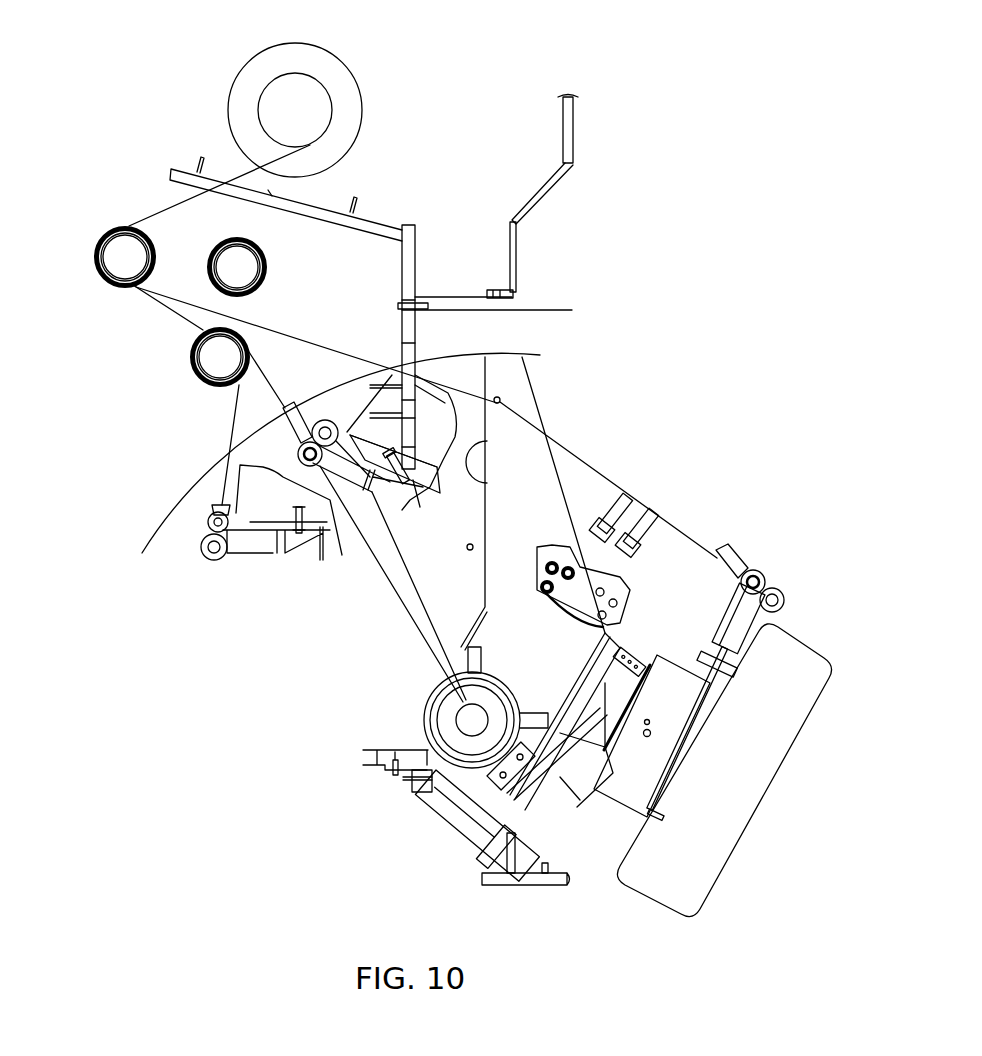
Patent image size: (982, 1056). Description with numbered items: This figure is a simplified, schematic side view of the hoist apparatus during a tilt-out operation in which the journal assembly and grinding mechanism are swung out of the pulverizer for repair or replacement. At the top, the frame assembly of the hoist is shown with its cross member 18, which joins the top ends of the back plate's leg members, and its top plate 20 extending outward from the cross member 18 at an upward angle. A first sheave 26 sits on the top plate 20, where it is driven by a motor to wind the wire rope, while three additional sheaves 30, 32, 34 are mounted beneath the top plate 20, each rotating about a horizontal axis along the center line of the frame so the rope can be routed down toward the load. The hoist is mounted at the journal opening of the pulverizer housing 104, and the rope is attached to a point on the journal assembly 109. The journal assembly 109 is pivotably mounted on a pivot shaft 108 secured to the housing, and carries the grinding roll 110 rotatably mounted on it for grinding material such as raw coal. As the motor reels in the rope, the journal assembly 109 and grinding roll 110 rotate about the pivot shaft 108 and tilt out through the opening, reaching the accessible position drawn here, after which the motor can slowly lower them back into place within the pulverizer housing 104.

The cross member 18 is at (415, 238).
The top plate 20 is at (177, 167).
The first sheave 26 is at (310, 100).
The sheave 30 is at (120, 263).
The sheave 32 is at (210, 367).
The sheave 34 is at (245, 270).
The pulverizer housing 104 is at (560, 180).
The pivot shaft 108 is at (472, 727).
The journal assembly 109 is at (525, 370).
The grinding roll 110 is at (713, 807).